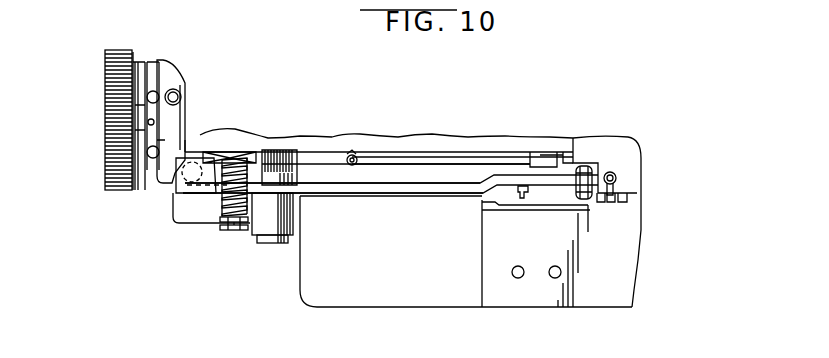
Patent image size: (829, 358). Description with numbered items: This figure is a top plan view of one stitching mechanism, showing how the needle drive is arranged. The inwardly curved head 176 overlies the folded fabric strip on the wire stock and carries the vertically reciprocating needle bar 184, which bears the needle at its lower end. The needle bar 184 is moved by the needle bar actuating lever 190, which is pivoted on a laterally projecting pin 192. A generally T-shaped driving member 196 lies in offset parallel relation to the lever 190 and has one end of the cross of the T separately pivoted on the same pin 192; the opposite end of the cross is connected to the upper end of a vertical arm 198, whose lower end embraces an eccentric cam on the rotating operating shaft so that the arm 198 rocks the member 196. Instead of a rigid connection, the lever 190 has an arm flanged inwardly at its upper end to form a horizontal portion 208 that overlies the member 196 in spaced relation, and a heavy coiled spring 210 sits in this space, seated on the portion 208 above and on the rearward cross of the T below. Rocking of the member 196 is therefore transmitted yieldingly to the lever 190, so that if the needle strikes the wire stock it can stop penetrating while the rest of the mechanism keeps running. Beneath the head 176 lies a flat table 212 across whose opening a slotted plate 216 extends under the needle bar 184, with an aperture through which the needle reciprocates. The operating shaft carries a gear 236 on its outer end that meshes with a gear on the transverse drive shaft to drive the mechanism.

The gear 236 is at (115, 127).
The vertical arm 198 is at (156, 122).
The driving member 196 is at (170, 177).
The horizontal portion 208 is at (207, 186).
The coiled spring 210 is at (192, 157).
The laterally projecting pin 192 is at (275, 244).
The needle bar actuating lever 190 is at (457, 188).
The flat table 212 is at (617, 283).
The head 176 is at (628, 155).
The slotted plate 216 is at (632, 205).
The needle bar 184 is at (617, 178).